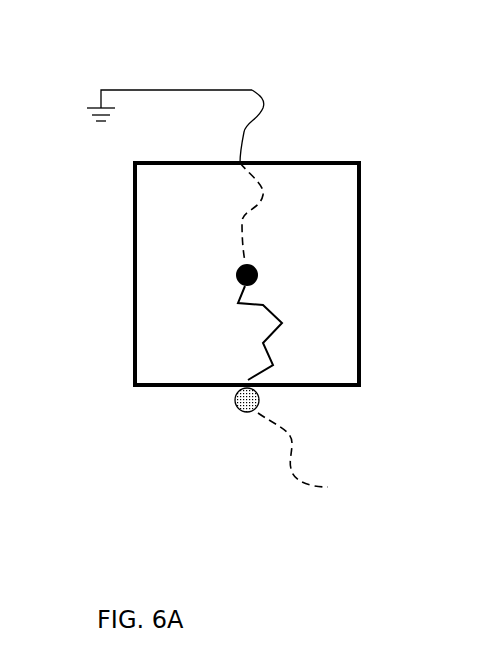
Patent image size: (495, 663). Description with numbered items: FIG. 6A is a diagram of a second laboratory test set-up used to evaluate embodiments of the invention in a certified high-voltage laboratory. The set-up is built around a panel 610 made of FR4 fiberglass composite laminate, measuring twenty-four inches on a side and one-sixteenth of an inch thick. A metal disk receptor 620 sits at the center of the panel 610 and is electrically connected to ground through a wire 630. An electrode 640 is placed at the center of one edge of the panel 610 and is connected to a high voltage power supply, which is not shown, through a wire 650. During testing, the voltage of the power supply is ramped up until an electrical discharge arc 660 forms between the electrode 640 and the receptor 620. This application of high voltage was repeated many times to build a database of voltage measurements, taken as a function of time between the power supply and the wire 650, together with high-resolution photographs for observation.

The panel 610 is at (152, 237).
The metal disk receptor 620 is at (266, 263).
The wire 630 is at (185, 81).
The electrode 640 is at (229, 419).
The wire 650 is at (316, 495).
The electrical discharge arc 660 is at (291, 324).